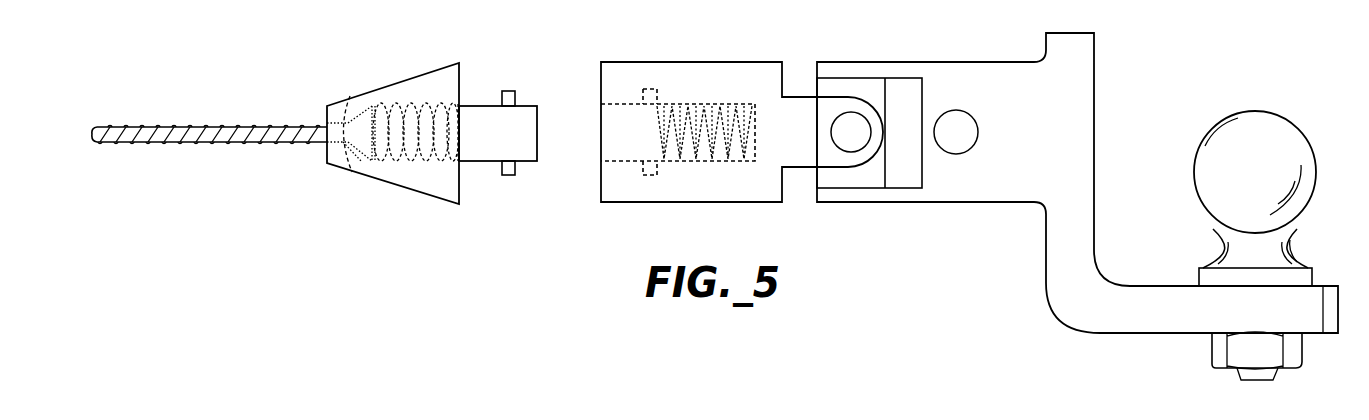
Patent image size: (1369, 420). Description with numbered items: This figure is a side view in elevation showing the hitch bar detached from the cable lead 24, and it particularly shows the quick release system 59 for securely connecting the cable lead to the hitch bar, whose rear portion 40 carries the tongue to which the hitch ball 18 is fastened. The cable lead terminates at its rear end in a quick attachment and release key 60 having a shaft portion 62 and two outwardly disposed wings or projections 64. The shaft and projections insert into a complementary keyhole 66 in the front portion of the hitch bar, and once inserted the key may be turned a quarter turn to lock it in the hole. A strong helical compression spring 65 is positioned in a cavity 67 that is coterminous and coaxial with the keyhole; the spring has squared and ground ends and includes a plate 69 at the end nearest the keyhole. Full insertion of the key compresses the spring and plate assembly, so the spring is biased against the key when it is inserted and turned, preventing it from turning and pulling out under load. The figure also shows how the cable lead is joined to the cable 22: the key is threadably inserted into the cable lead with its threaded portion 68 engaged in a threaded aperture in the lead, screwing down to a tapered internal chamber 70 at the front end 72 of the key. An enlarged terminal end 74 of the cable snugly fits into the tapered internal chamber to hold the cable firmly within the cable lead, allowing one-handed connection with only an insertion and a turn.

The hitch ball 18 is at (1265, 123).
The cable 22 is at (192, 126).
The cable lead 24 is at (388, 170).
The rear portion 40 is at (942, 75).
The quick release system 59 is at (597, 44).
The quick attachment and release key 60 is at (520, 108).
The shaft portion 62 is at (520, 150).
The wings or projections 64 is at (508, 90).
The helical compression spring 65 is at (707, 105).
The keyhole 66 is at (628, 115).
The cavity 67 is at (736, 165).
The threaded portion 68 is at (431, 103).
The plate / threaded aperture 69 is at (430, 184).
The tapered internal chamber 70 is at (345, 100).
The front end 72 is at (362, 104).
The enlarged terminal end 74 is at (346, 160).